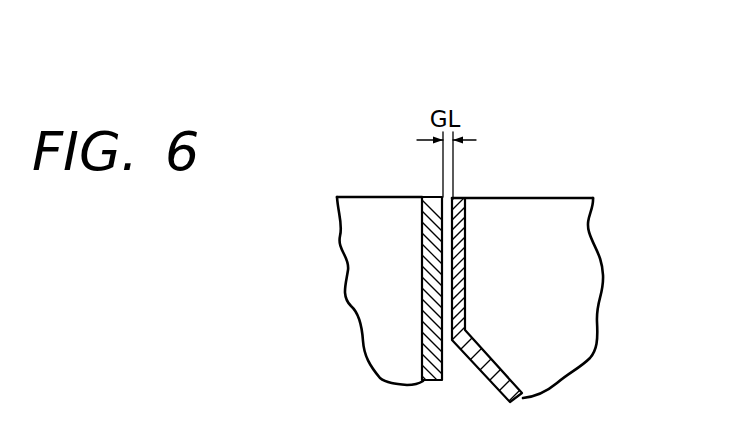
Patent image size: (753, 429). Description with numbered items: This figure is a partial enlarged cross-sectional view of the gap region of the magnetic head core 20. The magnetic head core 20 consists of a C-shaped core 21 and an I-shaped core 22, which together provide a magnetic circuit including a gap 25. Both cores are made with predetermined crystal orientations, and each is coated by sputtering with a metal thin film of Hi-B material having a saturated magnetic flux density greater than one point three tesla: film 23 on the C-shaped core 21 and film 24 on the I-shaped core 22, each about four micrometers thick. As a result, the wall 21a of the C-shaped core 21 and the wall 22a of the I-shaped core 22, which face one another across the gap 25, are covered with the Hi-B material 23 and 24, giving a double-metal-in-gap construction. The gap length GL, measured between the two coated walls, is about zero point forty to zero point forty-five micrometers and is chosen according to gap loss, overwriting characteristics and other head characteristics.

The magnetic head core 20 is at (466, 92).
The C-shaped core 21 is at (558, 204).
The wall of the gap on the C-shaped core 21a is at (467, 293).
The I-shaped core 22 is at (363, 197).
The wall of the gap on the I-shaped core 22a is at (423, 313).
The metal thin film 23 is at (463, 198).
The metal thin film 24 is at (435, 197).
The gap 25 is at (458, 186).